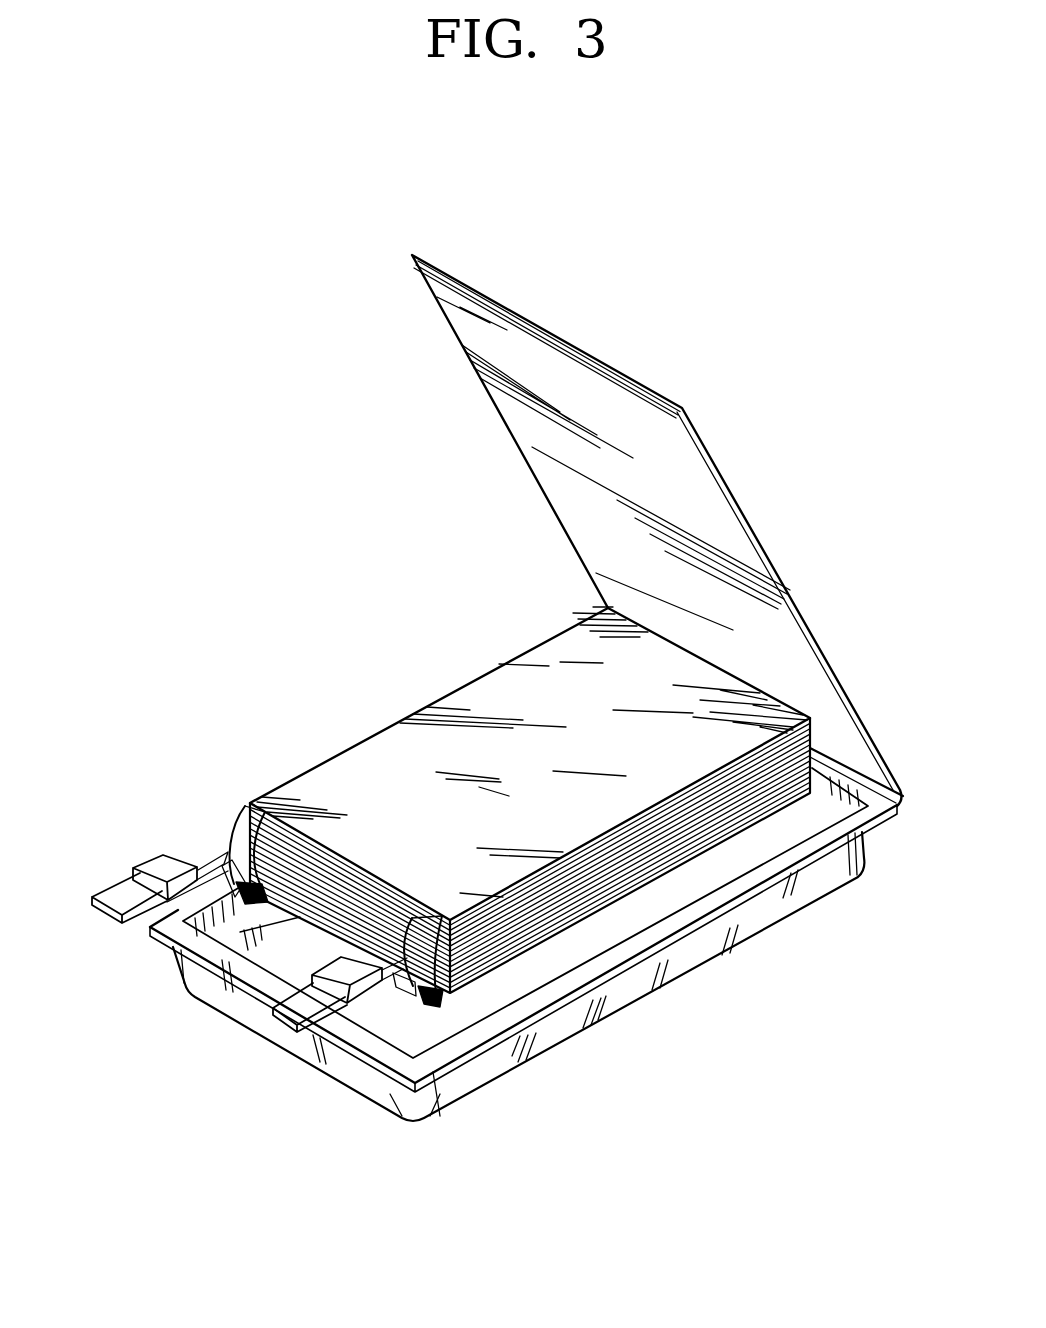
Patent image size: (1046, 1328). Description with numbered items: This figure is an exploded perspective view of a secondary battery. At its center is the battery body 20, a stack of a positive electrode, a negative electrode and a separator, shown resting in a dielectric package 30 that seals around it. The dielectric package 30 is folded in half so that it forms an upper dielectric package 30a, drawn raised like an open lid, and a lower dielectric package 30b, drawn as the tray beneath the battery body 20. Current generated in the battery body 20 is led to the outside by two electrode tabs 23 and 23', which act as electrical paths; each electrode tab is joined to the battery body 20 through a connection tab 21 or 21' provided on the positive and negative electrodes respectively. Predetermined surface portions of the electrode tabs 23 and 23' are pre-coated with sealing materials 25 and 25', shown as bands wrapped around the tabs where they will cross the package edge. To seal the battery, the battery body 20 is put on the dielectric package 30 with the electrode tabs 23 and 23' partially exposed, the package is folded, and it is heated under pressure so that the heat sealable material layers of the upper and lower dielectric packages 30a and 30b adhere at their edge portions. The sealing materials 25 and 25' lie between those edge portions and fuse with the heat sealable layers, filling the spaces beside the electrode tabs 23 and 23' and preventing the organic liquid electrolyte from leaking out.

The battery body 20 is at (402, 713).
The connection tab 21 is at (254, 813).
The connection tab 21' is at (431, 918).
The electrode tab 23 is at (153, 860).
The electrode tab 23' is at (291, 1028).
The sealing material 25 is at (156, 828).
The sealing material 25' is at (345, 1046).
The dielectric package 30 is at (636, 1006).
The upper dielectric package 30a is at (560, 338).
The lower dielectric package 30b is at (190, 963).